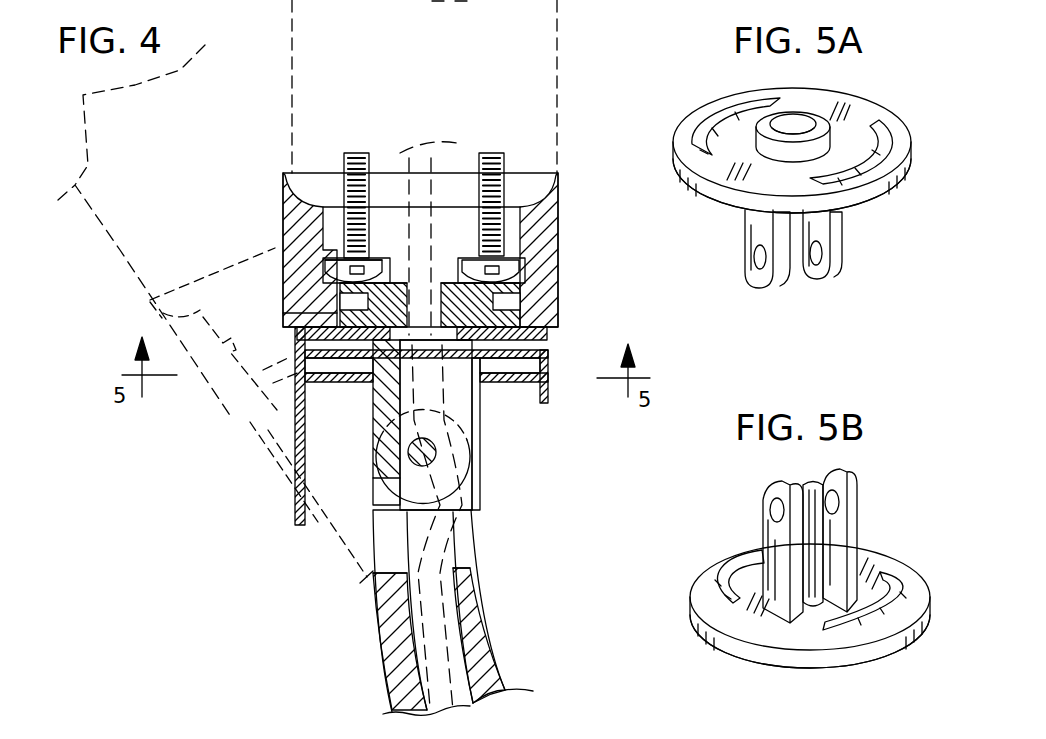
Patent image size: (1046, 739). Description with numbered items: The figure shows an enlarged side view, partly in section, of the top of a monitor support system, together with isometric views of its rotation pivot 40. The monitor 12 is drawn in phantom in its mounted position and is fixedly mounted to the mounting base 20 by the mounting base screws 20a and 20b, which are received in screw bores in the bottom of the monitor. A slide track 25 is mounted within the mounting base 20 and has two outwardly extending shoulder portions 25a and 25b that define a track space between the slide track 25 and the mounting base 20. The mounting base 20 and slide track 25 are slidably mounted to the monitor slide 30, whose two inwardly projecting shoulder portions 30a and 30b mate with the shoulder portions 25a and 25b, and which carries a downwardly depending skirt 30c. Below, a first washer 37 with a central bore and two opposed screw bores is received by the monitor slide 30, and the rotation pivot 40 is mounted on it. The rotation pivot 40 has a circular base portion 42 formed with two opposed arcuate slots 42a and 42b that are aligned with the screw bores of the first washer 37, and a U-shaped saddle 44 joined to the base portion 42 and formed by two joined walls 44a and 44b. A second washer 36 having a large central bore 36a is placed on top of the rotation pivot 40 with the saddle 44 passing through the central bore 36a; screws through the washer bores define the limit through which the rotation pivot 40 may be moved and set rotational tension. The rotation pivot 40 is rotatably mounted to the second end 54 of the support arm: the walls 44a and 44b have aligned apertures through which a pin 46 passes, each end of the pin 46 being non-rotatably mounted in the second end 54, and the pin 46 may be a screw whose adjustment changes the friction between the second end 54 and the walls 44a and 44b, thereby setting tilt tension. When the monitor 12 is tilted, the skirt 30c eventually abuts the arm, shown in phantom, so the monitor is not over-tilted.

In FIG. 4, the monitor 12 is at (563, 43).
In FIG. 4, the mounting base 20 is at (560, 200).
In FIG. 4, the mounting base screw 20a is at (360, 153).
In FIG. 4, the mounting base screw 20b is at (487, 153).
In FIG. 4, the slide track 25 is at (558, 247).
In FIG. 4, the shoulder portion 25a is at (548, 350).
In FIG. 4, the shoulder portion 25b is at (357, 300).
In FIG. 4, the monitor slide 30 is at (548, 330).
In FIG. 4, the shoulder portion 30a is at (560, 276).
In FIG. 4, the shoulder portion 30b is at (347, 270).
In FIG. 4, the skirt 30c is at (352, 577).
In FIG. 4, the second washer 36 is at (298, 392).
In FIG. 4, the central bore 36a is at (493, 408).
In FIG. 4, the first washer 37 is at (292, 313).
In FIG. 4, the rotation pivot 40 is at (537, 405).
In FIG. 5A, the rotation pivot 40 is at (685, 133).
In FIG. 5B, the rotation pivot 40 is at (703, 580).
In FIG. 4, the circular base portion 42 is at (547, 383).
In FIG. 5A, the circular base portion 42 is at (890, 190).
In FIG. 5B, the circular base portion 42 is at (692, 613).
In FIG. 4, the arcuate slot 42a is at (527, 407).
In FIG. 5A, the arcuate slot 42a is at (877, 130).
In FIG. 5B, the arcuate slot 42a is at (743, 547).
In FIG. 4, the arcuate slot 42b is at (429, 406).
In FIG. 5A, the arcuate slot 42b is at (737, 93).
In FIG. 5B, the arcuate slot 42b is at (893, 570).
In FIG. 4, the U-shaped saddle 44 is at (400, 474).
In FIG. 5A, the U-shaped saddle 44 is at (745, 237).
In FIG. 5B, the U-shaped saddle 44 is at (857, 497).
In FIG. 5A, the wall 44a is at (765, 287).
In FIG. 5B, the wall 44a is at (838, 472).
In FIG. 4, the wall 44b is at (480, 445).
In FIG. 5A, the wall 44b is at (830, 277).
In FIG. 5B, the wall 44b is at (773, 483).
In FIG. 4, the pin 46 is at (409, 452).
In FIG. 4, the second end 54 is at (473, 497).